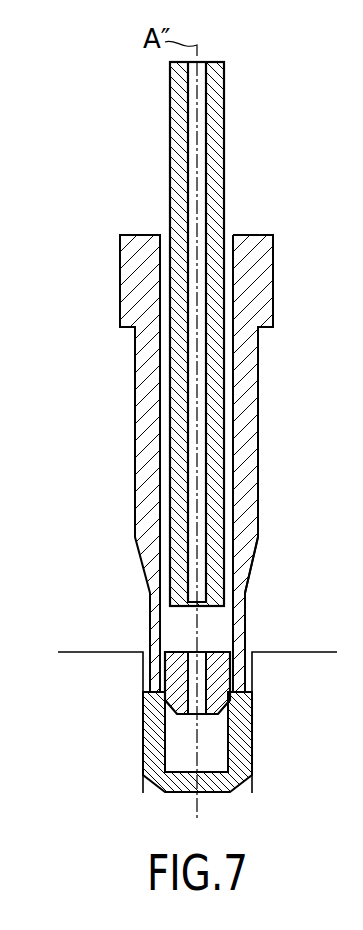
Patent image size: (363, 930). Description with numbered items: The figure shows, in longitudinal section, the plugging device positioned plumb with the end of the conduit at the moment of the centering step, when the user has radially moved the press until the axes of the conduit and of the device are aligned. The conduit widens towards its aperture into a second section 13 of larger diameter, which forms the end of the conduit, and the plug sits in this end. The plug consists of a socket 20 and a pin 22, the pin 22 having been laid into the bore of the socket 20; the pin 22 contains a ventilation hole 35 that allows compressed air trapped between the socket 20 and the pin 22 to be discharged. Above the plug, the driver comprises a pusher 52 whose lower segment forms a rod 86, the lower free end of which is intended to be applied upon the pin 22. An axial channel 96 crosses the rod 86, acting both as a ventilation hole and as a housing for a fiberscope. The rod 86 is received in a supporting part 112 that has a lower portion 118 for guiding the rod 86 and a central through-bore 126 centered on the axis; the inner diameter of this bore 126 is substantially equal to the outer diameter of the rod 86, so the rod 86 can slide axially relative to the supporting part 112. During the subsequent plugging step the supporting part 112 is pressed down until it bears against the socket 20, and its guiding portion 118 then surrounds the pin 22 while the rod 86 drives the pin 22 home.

The second section 13 is at (142, 787).
The socket 20 is at (157, 757).
The pin 22 is at (178, 678).
The ventilation hole 35 is at (210, 669).
The pusher 52 is at (236, 412).
The rod 86 is at (213, 468).
The axial channel 96 is at (200, 368).
The supporting part 112 is at (243, 508).
The lower portion 118 is at (243, 617).
The central through-bore 126 is at (228, 566).